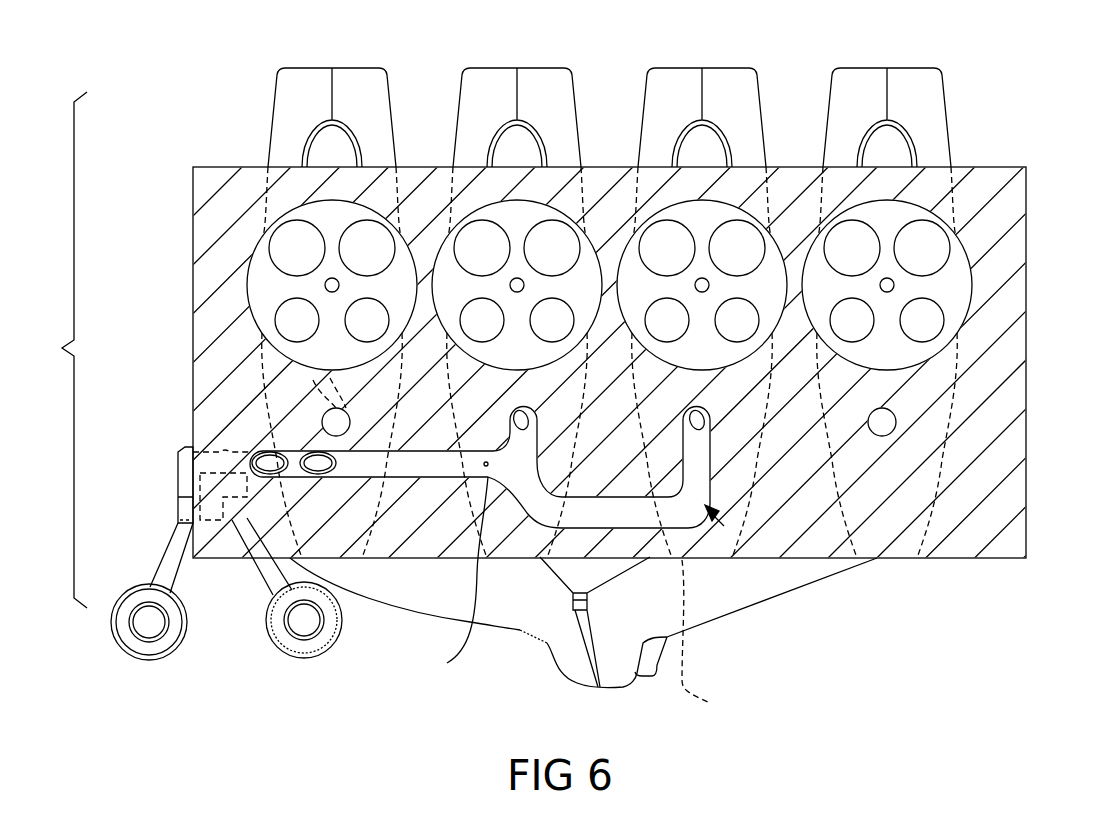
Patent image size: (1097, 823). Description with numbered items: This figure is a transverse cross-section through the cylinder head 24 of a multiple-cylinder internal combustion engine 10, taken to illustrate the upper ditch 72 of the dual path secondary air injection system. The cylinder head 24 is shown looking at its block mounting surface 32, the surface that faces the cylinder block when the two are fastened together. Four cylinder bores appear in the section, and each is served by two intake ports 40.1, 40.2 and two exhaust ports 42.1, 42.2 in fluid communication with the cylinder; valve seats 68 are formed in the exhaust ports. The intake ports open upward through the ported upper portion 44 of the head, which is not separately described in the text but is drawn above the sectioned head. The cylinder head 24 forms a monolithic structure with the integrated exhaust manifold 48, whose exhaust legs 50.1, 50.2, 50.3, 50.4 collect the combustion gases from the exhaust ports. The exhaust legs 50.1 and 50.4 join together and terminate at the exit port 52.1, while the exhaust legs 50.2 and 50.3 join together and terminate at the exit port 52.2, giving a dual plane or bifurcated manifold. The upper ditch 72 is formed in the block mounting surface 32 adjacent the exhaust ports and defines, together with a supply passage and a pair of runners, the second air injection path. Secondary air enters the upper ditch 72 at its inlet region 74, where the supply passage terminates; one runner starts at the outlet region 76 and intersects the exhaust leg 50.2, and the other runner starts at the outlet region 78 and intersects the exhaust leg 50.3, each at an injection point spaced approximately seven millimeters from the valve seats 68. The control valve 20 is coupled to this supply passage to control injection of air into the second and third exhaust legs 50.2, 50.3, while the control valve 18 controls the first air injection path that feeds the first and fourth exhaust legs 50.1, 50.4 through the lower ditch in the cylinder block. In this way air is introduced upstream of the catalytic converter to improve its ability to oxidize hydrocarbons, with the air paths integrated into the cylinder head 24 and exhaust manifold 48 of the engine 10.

The engine 10 is at (59, 350).
The control valve 18 is at (152, 647).
The control valve 20 is at (302, 647).
The cylinder head 24 is at (1013, 193).
The block mounting surface 32 is at (980, 524).
The intake port 40.1 is at (871, 260).
The intake port 40.2 is at (941, 260).
The exhaust port 42.1 is at (871, 330).
The exhaust port 42.2 is at (941, 330).
The intake ports 44 is at (977, 108).
The integrated exhaust manifold 48 is at (1008, 446).
The exhaust leg 50.1 is at (425, 598).
The exhaust leg 50.2 is at (570, 573).
The exhaust leg 50.3 is at (718, 637).
The exhaust leg 50.4 is at (707, 610).
The exit port 52.1 is at (597, 687).
The exit port 52.2 is at (647, 673).
The valve seats 68 is at (276, 312).
The upper ditch 72 is at (724, 526).
The inlet region 74 is at (330, 451).
The outlet region 76 is at (453, 576).
The outlet region 78 is at (703, 438).